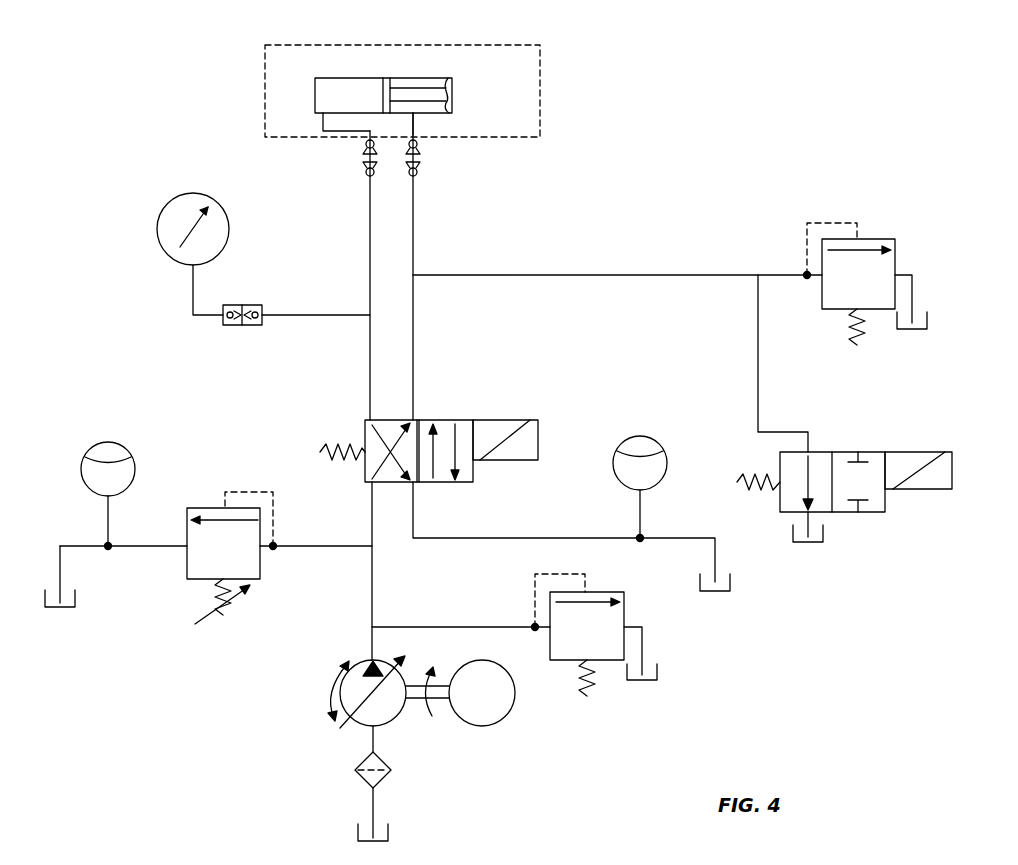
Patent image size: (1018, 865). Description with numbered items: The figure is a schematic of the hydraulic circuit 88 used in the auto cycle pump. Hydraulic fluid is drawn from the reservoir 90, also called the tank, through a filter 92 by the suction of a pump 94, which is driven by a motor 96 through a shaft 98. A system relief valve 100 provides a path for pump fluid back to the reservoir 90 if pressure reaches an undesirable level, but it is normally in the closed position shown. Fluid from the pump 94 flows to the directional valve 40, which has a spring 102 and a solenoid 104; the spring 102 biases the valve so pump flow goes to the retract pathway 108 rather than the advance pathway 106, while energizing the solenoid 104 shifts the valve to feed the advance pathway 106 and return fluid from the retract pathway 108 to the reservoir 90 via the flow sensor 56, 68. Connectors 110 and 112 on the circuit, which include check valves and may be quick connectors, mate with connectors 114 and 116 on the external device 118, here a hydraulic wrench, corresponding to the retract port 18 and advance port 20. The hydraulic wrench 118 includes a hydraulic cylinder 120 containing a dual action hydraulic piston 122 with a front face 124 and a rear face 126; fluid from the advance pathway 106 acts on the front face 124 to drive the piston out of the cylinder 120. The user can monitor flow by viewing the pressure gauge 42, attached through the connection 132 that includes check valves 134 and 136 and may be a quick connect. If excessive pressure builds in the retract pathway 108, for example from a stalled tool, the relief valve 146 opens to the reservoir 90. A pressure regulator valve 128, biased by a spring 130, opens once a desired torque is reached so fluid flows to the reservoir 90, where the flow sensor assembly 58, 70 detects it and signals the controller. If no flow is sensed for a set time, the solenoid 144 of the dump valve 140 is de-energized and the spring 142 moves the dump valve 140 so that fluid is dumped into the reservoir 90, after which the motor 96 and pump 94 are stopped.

The retract port 18 is at (420, 123).
The advance port 20 is at (323, 130).
The directional valve 40 is at (408, 435).
The pressure gauge 42 is at (162, 250).
The flow sensor 56 is at (693, 487).
The flow sensor 68 is at (668, 455).
The flow sensor assembly 58 is at (148, 483).
The flow sensor assembly 70 is at (131, 458).
The hydraulic circuit 88 is at (767, 146).
The reservoir 90 is at (78, 600).
The filter 92 is at (391, 772).
The pump 94 is at (400, 718).
The motor 96 is at (515, 705).
The shaft 98 is at (437, 686).
The system relief valve 100 is at (605, 595).
The spring 102 is at (320, 452).
The solenoid 104 is at (498, 460).
The advance pathway 106 is at (370, 238).
The retract pathway 108 is at (414, 230).
The connector 110 is at (364, 172).
The connector 112 is at (418, 174).
The connector 114 is at (363, 146).
The connector 116 is at (420, 148).
The external device 118 is at (540, 78).
The hydraulic cylinder 120 is at (347, 78).
The dual action hydraulic piston 122 is at (433, 78).
The front face 124 is at (382, 102).
The rear face 126 is at (438, 112).
The pressure regulator valve 128 is at (253, 565).
The spring 130 is at (235, 612).
The connection 132 is at (238, 316).
The check valve 134 is at (252, 326).
The check valve 136 is at (229, 326).
The dump valve 140 is at (835, 468).
The spring 142 is at (740, 488).
The solenoid 144 is at (933, 490).
The relief valve 146 is at (877, 239).